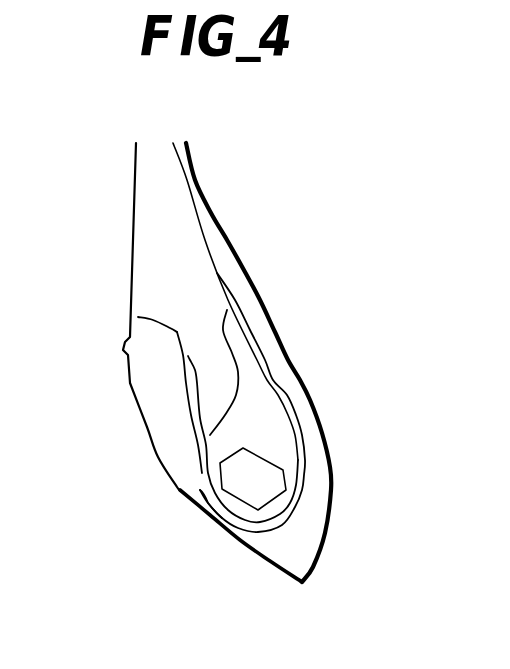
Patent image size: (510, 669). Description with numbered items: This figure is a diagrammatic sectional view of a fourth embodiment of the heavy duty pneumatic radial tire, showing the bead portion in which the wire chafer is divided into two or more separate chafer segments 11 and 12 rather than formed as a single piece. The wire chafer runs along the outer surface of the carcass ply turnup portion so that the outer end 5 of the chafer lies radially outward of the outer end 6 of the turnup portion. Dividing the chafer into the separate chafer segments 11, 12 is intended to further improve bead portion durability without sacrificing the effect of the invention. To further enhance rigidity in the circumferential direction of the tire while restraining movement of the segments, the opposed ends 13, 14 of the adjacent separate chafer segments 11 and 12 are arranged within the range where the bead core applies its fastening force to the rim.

The outer end of wire chafer 5 is at (138, 317).
The outer end of turnup portion 6 is at (196, 368).
The separate chafer segment 11 is at (197, 415).
The separate chafer segment 12 is at (292, 422).
The opposed end of separate chafer segment 13 is at (202, 474).
The opposed end of separate chafer segment 14 is at (200, 490).